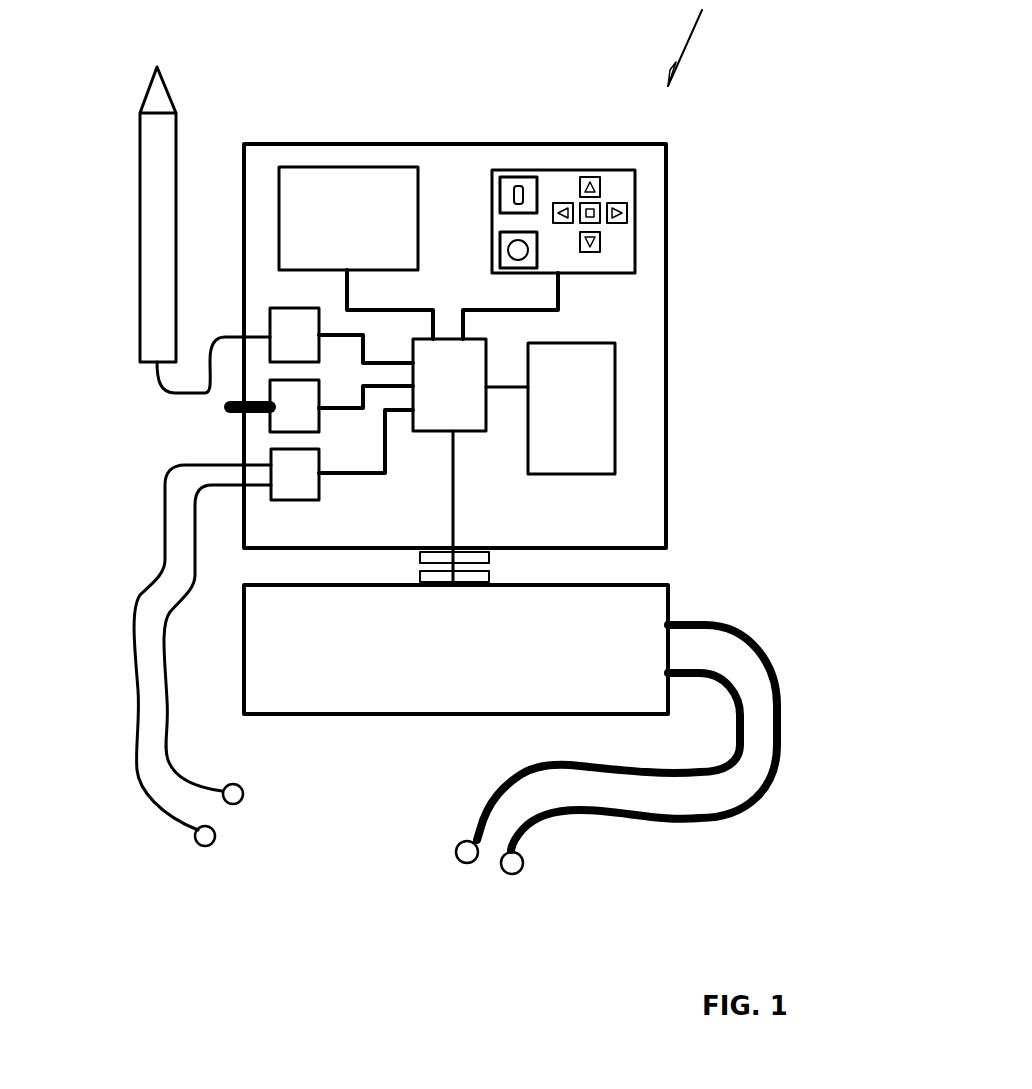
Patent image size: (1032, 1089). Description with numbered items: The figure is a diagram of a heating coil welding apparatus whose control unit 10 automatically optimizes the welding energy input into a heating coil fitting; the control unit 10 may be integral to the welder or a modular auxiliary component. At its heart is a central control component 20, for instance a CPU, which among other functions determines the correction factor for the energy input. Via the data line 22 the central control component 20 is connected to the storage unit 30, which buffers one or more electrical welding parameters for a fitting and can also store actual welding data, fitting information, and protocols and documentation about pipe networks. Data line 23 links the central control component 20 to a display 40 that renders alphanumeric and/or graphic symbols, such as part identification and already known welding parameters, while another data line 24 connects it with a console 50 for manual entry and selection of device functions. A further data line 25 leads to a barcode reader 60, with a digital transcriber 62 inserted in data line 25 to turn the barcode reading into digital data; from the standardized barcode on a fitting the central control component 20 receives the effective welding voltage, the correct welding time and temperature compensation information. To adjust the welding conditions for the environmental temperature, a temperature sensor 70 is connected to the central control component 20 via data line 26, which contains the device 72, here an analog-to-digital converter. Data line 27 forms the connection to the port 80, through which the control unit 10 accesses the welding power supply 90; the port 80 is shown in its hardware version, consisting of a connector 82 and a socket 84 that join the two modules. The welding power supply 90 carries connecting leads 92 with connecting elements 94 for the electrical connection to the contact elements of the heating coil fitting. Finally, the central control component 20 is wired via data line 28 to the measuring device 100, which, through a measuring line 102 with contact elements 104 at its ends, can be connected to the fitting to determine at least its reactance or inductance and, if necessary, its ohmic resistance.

The control unit 10 is at (643, 518).
The central control component 20 is at (449, 385).
The data line 22 is at (508, 389).
The data line 23 is at (390, 303).
The data line 24 is at (560, 300).
The data line 25 is at (355, 330).
The data line 26 is at (337, 410).
The data line 27 is at (457, 515).
The data line 28 is at (337, 478).
The storage unit 30 is at (571, 408).
The display 40 is at (348, 218).
The console 50 is at (619, 260).
The barcode reader 60 is at (150, 297).
The digital transcriber 62 is at (294, 335).
The temperature sensor 70 is at (230, 413).
The A/D converter device 72 is at (294, 406).
The port 80 is at (560, 569).
The connector 82 is at (440, 548).
The socket 84 is at (433, 578).
The welding power supply 90 is at (641, 626).
The connecting leads 92 is at (750, 747).
The connecting elements 94 is at (465, 863).
The measuring device 100 is at (298, 474).
The measuring line 102 is at (140, 700).
The contact elements 104 is at (243, 805).